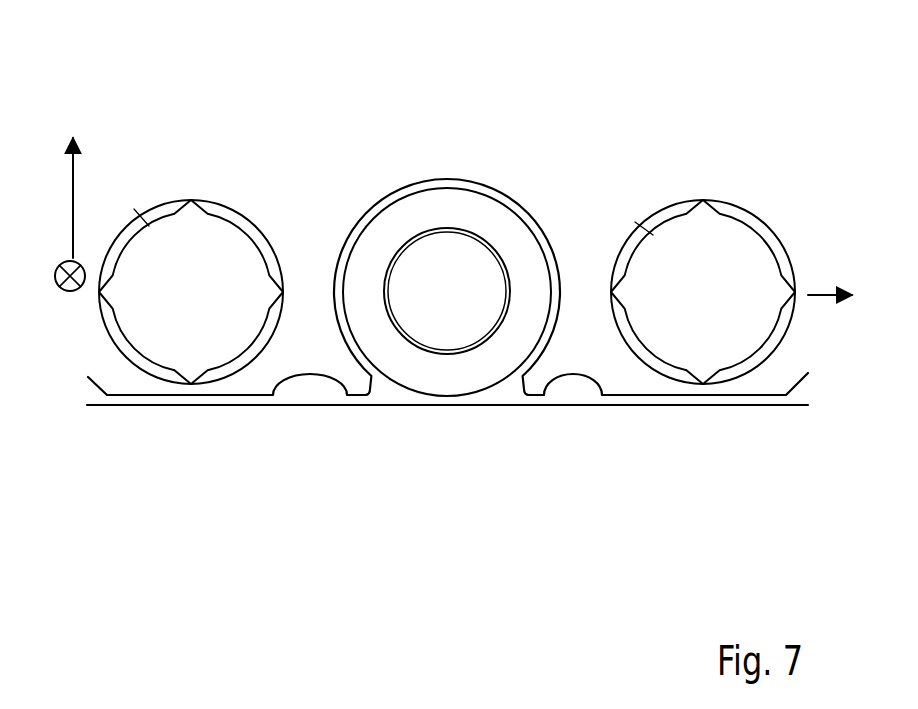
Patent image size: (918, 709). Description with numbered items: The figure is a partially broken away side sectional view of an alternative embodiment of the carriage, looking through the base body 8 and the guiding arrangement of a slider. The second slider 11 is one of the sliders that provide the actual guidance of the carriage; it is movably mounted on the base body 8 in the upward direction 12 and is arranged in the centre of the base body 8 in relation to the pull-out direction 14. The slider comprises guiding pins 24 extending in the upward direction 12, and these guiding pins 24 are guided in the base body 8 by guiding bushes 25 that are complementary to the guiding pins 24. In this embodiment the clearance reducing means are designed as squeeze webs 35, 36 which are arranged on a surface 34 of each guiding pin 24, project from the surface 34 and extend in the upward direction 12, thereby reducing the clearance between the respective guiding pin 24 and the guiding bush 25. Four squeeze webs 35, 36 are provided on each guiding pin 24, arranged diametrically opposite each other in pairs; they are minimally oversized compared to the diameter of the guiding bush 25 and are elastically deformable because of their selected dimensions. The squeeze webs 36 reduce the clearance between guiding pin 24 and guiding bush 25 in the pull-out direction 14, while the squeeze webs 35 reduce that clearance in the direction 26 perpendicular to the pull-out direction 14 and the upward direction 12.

The base body 8 is at (305, 323).
The second slider 11 is at (443, 312).
The upward direction 12 is at (70, 291).
The pull-out direction 14 is at (823, 290).
The guiding pin 24 is at (172, 333).
The guiding bush 25 is at (266, 190).
The direction perpendicular to the pull-out direction and the upward direction 26 is at (72, 175).
The surface of the guiding pin 34 is at (150, 227).
The squeeze web 35 is at (193, 203).
The squeeze web 36 is at (100, 293).